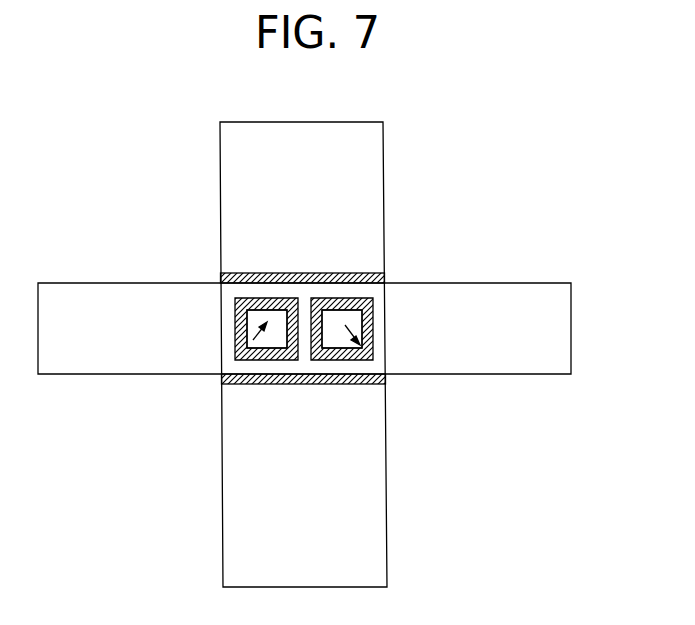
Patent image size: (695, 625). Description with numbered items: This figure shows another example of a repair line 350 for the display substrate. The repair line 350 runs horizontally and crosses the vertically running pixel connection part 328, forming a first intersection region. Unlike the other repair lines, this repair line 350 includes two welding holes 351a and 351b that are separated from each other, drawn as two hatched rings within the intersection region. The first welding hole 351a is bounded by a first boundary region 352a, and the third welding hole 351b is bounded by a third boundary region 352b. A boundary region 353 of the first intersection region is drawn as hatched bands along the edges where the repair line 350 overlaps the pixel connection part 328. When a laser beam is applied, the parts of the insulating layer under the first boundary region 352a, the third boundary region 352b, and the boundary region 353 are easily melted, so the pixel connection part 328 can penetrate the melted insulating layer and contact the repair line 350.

The pixel connection part 328 is at (375, 168).
The repair line 350 is at (562, 329).
The first welding hole 351a is at (362, 349).
The third welding hole 351b is at (247, 349).
The first boundary region 352a is at (372, 300).
The third boundary region 352b is at (235, 300).
The boundary region of first intersection region 353 is at (335, 380).